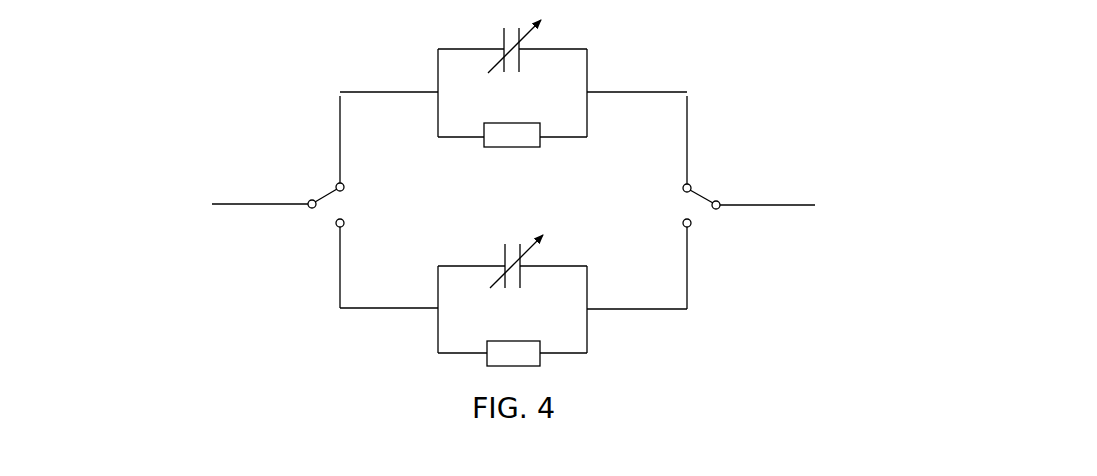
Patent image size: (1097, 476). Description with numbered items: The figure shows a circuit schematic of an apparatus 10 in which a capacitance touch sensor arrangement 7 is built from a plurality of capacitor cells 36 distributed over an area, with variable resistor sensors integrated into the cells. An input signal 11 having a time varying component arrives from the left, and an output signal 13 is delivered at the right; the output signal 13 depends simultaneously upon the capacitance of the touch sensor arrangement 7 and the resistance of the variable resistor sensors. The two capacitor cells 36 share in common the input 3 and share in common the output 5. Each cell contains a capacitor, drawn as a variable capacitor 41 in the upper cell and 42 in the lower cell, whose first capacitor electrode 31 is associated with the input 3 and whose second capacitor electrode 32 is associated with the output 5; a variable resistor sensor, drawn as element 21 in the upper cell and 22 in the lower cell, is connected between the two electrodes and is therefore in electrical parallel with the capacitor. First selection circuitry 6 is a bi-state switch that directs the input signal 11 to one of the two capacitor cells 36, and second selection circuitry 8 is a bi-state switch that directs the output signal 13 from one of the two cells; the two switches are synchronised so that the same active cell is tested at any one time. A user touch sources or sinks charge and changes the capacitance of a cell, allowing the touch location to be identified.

The apparatus 10 is at (739, 46).
The input signal 11 is at (237, 204).
The output signal 13 is at (750, 206).
The first selection circuitry 6 is at (330, 192).
The second selection circuitry 8 is at (700, 193).
The input 3 is at (362, 92).
The output 5 is at (637, 92).
The capacitance touch sensor arrangement 7 is at (606, 46).
The first variable capacitor 41 is at (501, 37).
The second variable capacitor 42 is at (503, 255).
The first resonator element 21 is at (484, 146).
The second resonator element 22 is at (487, 362).
The first capacitor electrode 31 is at (503, 67).
The second capacitor electrode 32 is at (522, 62).
The capacitor cells 36 is at (563, 153).